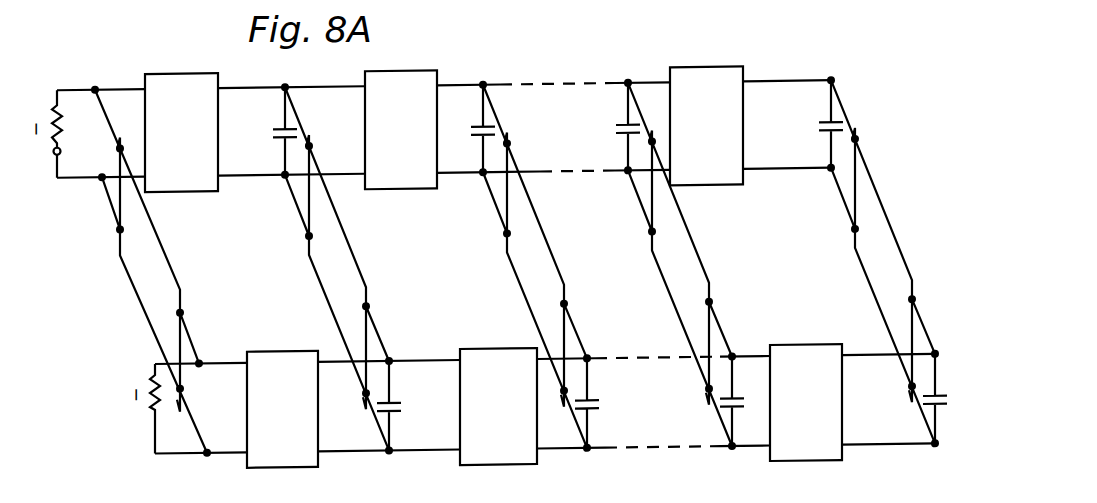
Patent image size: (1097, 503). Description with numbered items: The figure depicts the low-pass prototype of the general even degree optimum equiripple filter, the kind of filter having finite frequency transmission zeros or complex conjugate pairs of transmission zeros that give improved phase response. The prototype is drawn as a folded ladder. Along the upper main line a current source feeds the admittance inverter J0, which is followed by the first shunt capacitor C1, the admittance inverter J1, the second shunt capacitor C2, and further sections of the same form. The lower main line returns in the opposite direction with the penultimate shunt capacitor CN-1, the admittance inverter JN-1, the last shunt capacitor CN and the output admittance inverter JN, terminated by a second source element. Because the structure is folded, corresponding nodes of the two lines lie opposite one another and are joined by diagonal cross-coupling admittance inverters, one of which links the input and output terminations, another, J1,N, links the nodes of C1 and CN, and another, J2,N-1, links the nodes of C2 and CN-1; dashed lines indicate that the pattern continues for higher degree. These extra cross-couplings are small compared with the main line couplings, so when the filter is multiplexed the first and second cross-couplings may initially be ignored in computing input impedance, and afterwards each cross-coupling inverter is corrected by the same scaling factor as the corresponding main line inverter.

The admittance inverter J0 is at (181, 132).
The admittance inverter J1 is at (401, 129).
The admittance inverter JN is at (282, 409).
The admittance inverter JN-1 is at (498, 406).
The shunt capacitor C1 is at (270, 131).
The shunt capacitor C2 is at (471, 129).
The shunt capacitor CN is at (403, 405).
The shunt capacitor CN-1 is at (605, 403).
The cross-coupling admittance inverter J1,N is at (337, 269).
The cross-coupling admittance inverter J2,N-1 is at (540, 266).